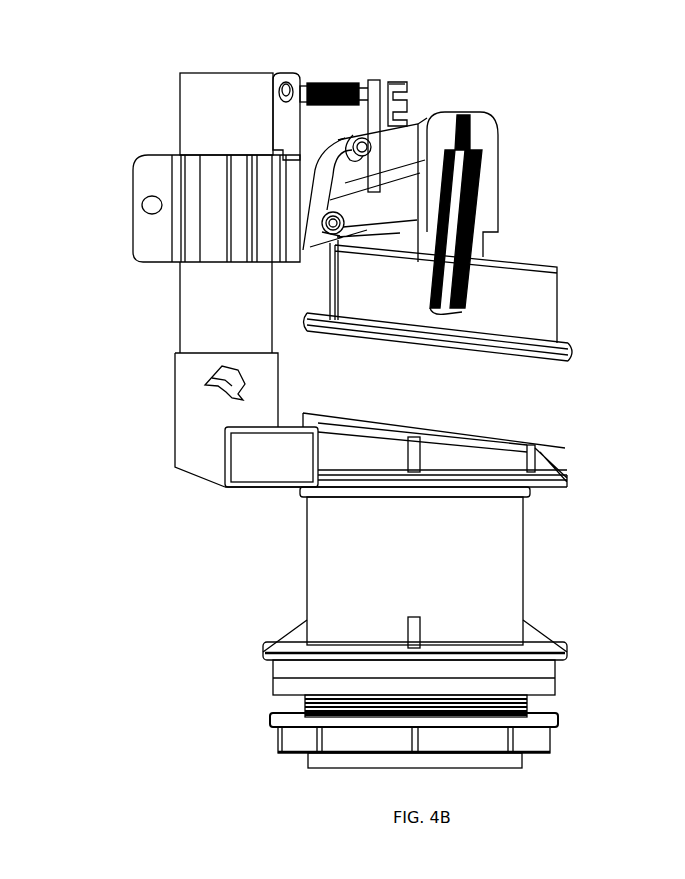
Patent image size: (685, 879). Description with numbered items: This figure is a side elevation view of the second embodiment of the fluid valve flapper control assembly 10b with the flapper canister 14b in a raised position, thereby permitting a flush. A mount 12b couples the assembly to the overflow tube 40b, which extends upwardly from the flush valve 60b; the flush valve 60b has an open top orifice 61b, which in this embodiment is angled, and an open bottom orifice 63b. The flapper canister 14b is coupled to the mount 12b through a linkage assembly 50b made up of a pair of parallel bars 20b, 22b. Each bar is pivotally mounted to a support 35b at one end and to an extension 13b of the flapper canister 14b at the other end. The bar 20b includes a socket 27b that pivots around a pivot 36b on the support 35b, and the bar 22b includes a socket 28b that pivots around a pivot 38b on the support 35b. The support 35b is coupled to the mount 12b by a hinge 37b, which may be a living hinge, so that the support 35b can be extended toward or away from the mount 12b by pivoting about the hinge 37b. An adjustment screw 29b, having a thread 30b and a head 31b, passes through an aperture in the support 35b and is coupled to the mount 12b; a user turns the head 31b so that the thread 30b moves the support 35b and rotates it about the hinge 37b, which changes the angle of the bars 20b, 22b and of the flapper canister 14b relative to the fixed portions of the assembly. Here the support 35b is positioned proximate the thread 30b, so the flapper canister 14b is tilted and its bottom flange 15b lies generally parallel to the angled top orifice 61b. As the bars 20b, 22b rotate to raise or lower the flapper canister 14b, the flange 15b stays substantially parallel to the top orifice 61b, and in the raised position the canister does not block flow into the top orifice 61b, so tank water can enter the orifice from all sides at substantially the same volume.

The fluid valve flapper control assembly 10b is at (550, 125).
The mount 12b is at (285, 72).
The extension 13b is at (477, 235).
The flapper canister 14b is at (543, 277).
The flange 15b is at (563, 347).
The bar 20b is at (408, 133).
The bar 22b is at (375, 217).
The socket 27b is at (353, 150).
The socket 28b is at (333, 214).
The adjustment screw 29b is at (390, 82).
The thread 30b is at (315, 85).
The head 31b is at (393, 80).
The support 35b is at (368, 80).
The pivot 36b is at (365, 160).
The hinge 37b is at (330, 237).
The pivot 38b is at (335, 228).
The overflow tube 40b is at (198, 98).
The linkage assembly 50b is at (478, 88).
The flush valve 60b is at (513, 567).
The top orifice 61b is at (523, 433).
The bottom orifice 63b is at (500, 777).